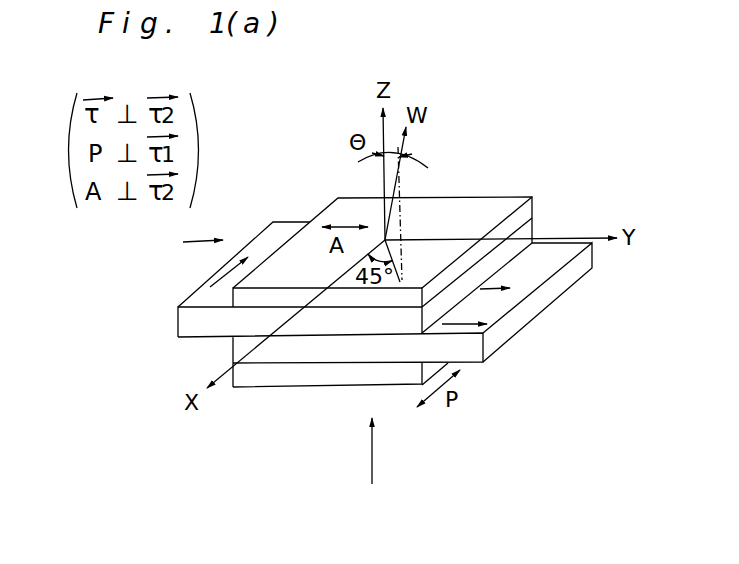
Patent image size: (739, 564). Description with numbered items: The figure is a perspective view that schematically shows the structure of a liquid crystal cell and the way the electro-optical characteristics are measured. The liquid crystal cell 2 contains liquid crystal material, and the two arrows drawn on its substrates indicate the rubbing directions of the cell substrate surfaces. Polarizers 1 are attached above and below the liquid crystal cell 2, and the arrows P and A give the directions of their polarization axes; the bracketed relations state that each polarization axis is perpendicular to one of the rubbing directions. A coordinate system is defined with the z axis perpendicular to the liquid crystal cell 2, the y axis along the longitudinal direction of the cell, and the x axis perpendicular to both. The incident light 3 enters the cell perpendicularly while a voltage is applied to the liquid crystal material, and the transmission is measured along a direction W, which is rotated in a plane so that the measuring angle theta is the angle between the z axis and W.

The polarizer 1 is at (514, 222).
The liquid crystal cell 2 is at (157, 302).
The incident light 3 is at (386, 451).